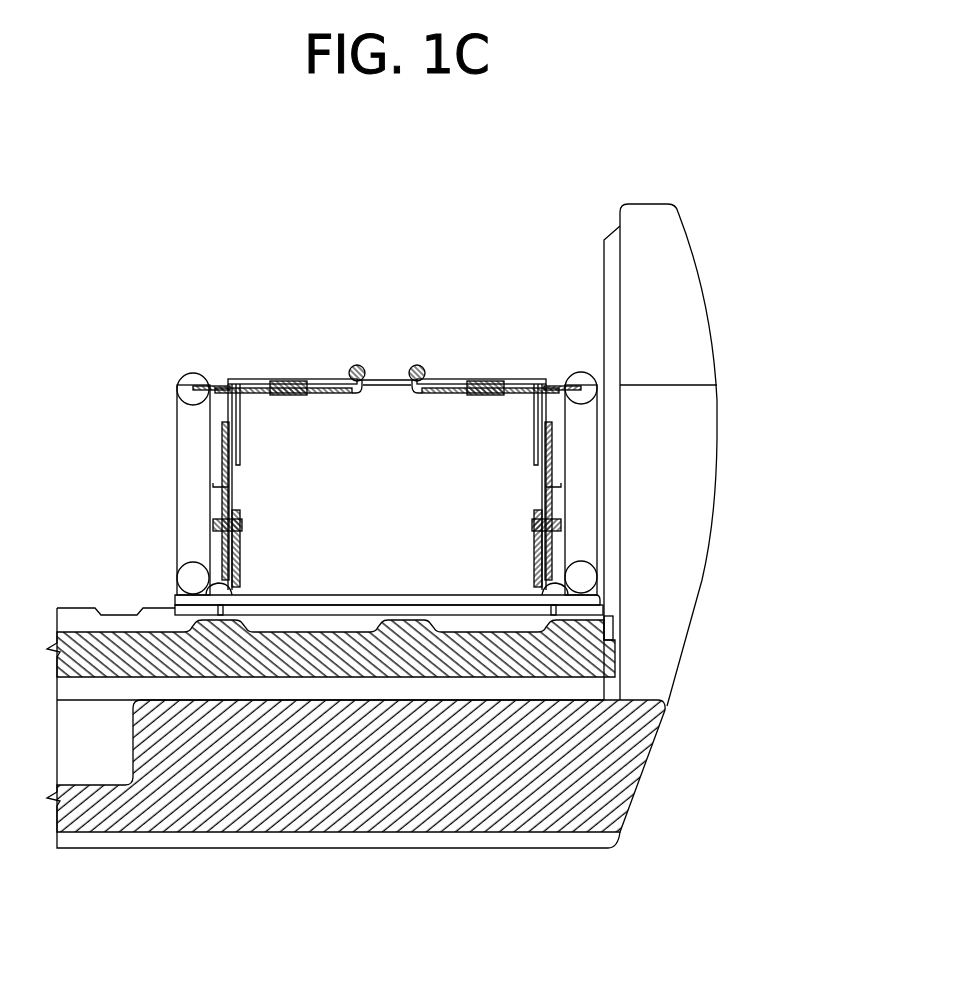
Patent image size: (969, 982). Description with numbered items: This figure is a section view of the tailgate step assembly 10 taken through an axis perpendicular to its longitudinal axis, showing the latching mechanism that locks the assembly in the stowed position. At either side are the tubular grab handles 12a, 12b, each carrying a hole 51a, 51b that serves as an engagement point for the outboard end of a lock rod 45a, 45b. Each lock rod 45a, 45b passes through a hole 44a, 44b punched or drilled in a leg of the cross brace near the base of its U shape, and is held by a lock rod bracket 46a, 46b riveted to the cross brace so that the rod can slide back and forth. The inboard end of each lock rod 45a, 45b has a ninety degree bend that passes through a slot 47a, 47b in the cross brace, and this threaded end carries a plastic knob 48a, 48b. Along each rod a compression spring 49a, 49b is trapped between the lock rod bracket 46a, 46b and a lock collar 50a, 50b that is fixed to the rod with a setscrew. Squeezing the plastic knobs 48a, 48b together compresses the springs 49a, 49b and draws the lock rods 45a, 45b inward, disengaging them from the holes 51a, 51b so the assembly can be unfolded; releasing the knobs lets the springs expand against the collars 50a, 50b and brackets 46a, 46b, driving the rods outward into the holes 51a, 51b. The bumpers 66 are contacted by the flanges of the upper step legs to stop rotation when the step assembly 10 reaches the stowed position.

The tailgate step assembly 10 is at (320, 565).
The tubular grab handle 12a is at (587, 428).
The tubular grab handle 12b is at (196, 432).
The hole 44a is at (550, 382).
The hole 44b is at (222, 382).
The lock rod 45a is at (532, 392).
The lock rod 45b is at (240, 392).
The lock rod bracket 46a is at (430, 392).
The lock rod bracket 46b is at (340, 392).
The slot 47a is at (404, 378).
The slot 47b is at (368, 385).
The plastic knob 48a is at (418, 368).
The plastic knob 48b is at (354, 368).
The compression spring 49a is at (478, 382).
The compression spring 49b is at (284, 382).
The lock collar 50a is at (498, 380).
The lock collar 50b is at (272, 380).
The hole 51a is at (583, 372).
The hole 51b is at (192, 372).
The bumper 66 is at (207, 588).